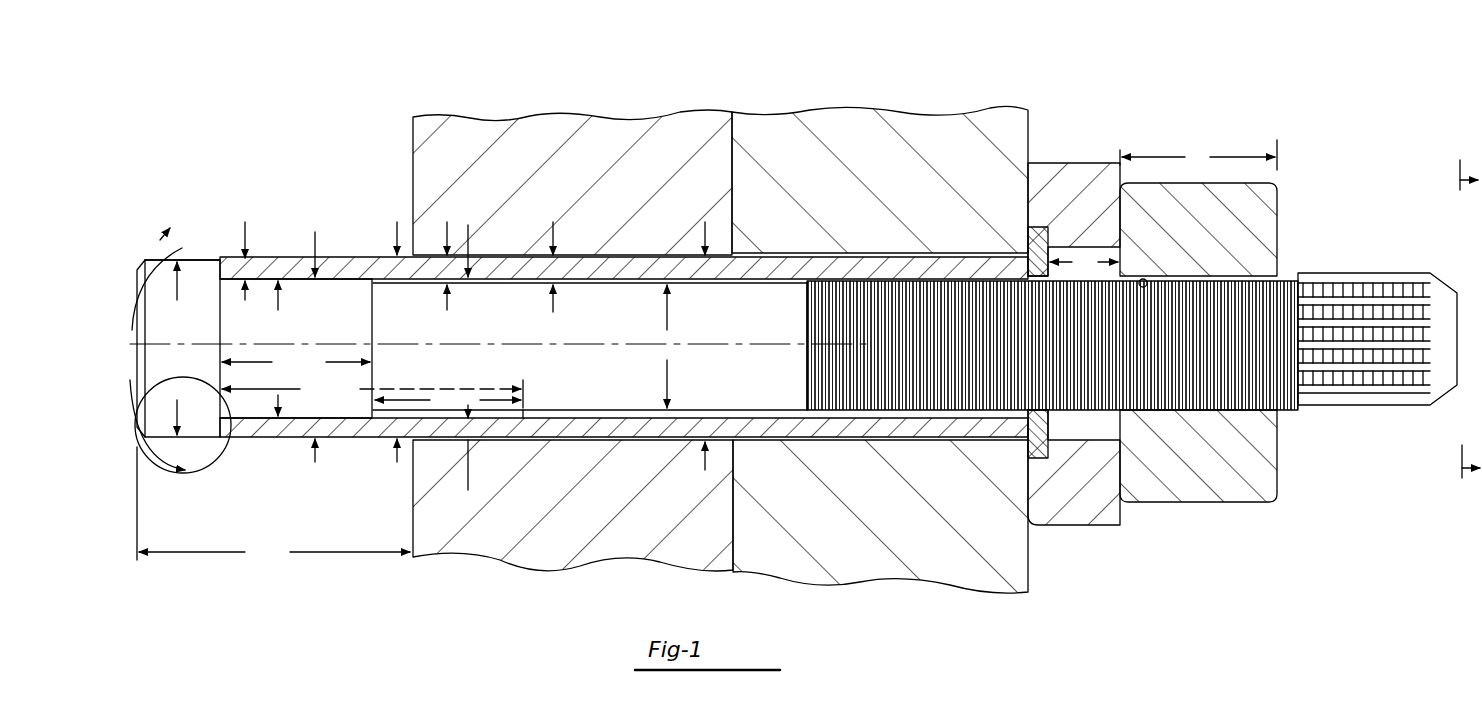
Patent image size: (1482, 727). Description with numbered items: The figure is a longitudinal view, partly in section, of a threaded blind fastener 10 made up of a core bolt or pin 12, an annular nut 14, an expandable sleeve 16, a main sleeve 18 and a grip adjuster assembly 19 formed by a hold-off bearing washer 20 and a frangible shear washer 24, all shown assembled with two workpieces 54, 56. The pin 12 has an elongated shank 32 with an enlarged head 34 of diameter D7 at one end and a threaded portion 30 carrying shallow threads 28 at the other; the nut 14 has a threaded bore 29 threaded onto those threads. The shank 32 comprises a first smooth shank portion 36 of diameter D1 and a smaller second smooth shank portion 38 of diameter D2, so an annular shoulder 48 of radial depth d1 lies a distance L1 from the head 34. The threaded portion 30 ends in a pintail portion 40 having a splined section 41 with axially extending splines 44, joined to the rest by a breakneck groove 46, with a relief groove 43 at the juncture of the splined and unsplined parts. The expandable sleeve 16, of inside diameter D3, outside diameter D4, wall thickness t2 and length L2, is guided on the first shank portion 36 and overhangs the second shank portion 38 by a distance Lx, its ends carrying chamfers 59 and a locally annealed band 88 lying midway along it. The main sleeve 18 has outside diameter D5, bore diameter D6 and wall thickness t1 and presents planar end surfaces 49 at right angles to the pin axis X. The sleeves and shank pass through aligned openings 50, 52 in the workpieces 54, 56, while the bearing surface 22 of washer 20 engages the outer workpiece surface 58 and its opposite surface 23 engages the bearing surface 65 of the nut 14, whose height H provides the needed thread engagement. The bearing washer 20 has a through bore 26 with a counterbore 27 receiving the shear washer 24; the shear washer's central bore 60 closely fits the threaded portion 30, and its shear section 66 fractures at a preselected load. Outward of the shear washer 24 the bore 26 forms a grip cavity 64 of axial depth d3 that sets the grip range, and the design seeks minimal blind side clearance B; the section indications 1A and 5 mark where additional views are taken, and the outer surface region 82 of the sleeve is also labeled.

The blind fastener 10 is at (250, 212).
The core bolt or pin 12 is at (580, 255).
The annular nut 14 is at (1222, 502).
The expandable sleeve 16 is at (275, 437).
The main sleeve 18 is at (533, 442).
The grip adjuster construction or assembly 19 is at (1096, 145).
The load bearing or hold-off washer 20 is at (1063, 163).
The load bearing surface 22 is at (1012, 180).
The load bearing surface 23 is at (1110, 212).
The frangible resistance or shear washer 24 is at (944, 210).
The central through bore 26 is at (1110, 433).
The enlarged counterbore 27 is at (1030, 525).
The threads 28 is at (1280, 430).
The threaded bore 29 is at (1280, 490).
The threaded portion 30 is at (795, 75).
The elongated shank 32 is at (742, 310).
The enlarged head 34 is at (205, 258).
The first smooth shank portion 36 is at (352, 315).
The second smooth shank portion 38 is at (632, 315).
The pintail portion 40 is at (1435, 256).
The splined section 41 is at (1430, 208).
The relief groove 43 is at (1292, 404).
The splines 44 is at (1398, 388).
The annular breakneck groove 46 is at (1143, 276).
The annular shoulder 48 is at (374, 380).
The end surface of main sleeve 49 is at (515, 272).
The opening or bore 50 is at (612, 445).
The opening or bore 52 is at (783, 255).
The workpiece 54 is at (560, 150).
The workpiece 56 is at (918, 140).
The outer surface of workpiece 58 is at (1040, 160).
The chamfers 59 is at (526, 412).
The central bore of shear washer 60 is at (1045, 430).
The outer grip cavity 64 is at (1042, 416).
The load bearing surface of nut 65 is at (1125, 505).
The shear section 66 is at (1050, 225).
The sleeve outer surface 82 is at (410, 150).
The annealed section 88 is at (364, 440).
The section line 1A is at (1456, 323).
The detail circle 5 is at (183, 468).
The pin axis X is at (157, 346).
The blind side clearance B is at (274, 555).
The nut height or width H is at (1198, 155).
The diameter of first shank portion D1 is at (315, 357).
The diameter of second shank portion D2 is at (465, 454).
The inside diameter of expandable sleeve D3 is at (278, 348).
The outside diameter of expandable sleeve D4 is at (385, 356).
The outside diameter of main sleeve D5 is at (705, 334).
The bore diameter of main sleeve D6 is at (648, 346).
The diameter of pin head D7 is at (177, 348).
The radial depth of shoulder d1 is at (450, 282).
The axial depth of grip cavity d3 is at (1084, 262).
The wall thickness of main sleeve t1 is at (551, 282).
The wall thickness of expandable sleeve t2 is at (239, 277).
The preselected distance L1 is at (296, 362).
The length of expandable sleeve L2 is at (371, 390).
The distance Lx is at (465, 400).